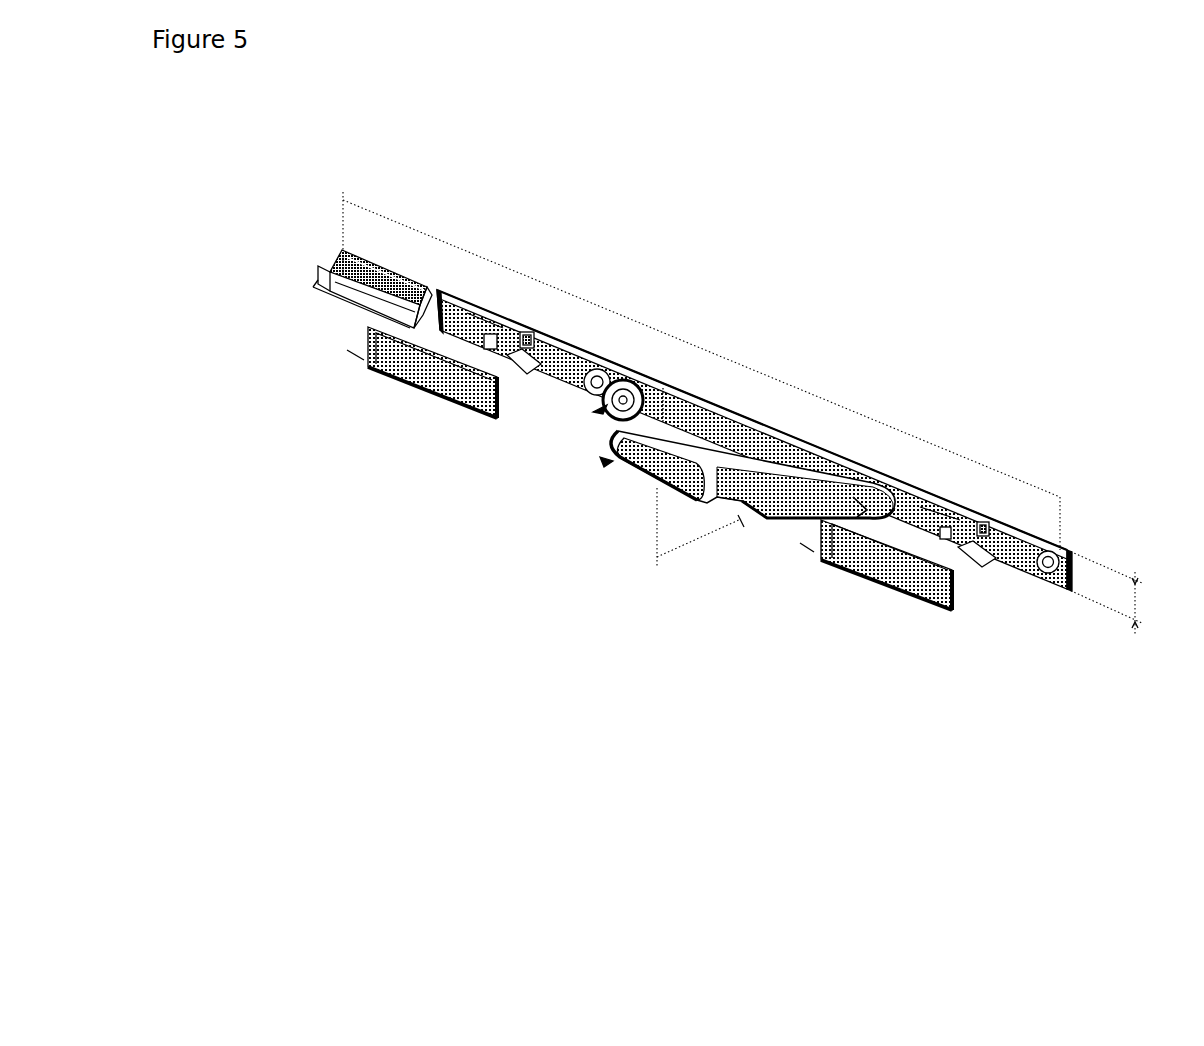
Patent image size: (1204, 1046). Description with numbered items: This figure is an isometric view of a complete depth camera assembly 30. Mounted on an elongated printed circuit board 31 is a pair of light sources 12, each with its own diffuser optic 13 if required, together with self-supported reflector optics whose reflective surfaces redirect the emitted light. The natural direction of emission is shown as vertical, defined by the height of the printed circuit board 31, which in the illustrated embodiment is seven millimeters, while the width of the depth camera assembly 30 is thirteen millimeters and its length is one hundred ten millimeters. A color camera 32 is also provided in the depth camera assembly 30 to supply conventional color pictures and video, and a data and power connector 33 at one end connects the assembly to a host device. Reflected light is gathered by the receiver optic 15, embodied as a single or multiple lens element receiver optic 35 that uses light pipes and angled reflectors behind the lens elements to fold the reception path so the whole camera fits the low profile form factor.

The depth camera assembly 30 is at (682, 412).
The printed circuit board 31 is at (453, 308).
The data and power connector 33 is at (327, 272).
The light source 12 is at (530, 331).
The diffuser optic 13 is at (417, 380).
The color (RGB) camera 32 is at (634, 383).
The receiver optic 35 is at (735, 450).
The receiver optic 15 is at (652, 468).